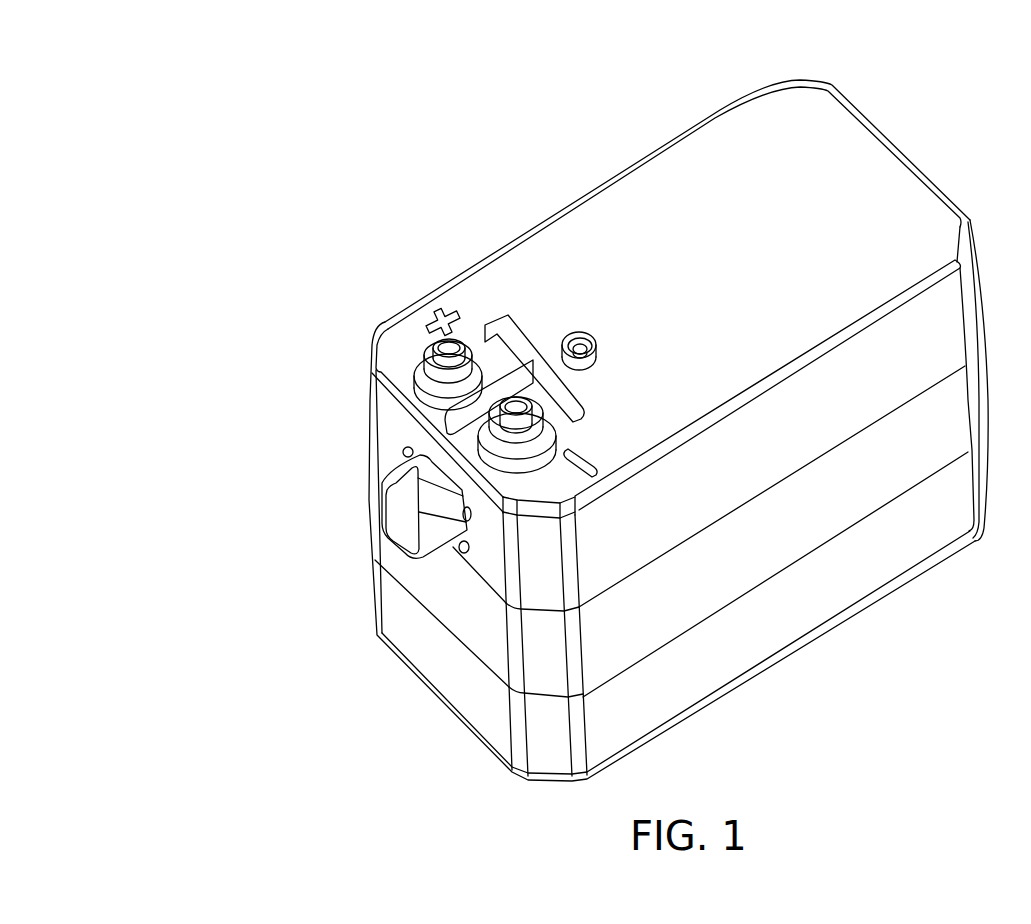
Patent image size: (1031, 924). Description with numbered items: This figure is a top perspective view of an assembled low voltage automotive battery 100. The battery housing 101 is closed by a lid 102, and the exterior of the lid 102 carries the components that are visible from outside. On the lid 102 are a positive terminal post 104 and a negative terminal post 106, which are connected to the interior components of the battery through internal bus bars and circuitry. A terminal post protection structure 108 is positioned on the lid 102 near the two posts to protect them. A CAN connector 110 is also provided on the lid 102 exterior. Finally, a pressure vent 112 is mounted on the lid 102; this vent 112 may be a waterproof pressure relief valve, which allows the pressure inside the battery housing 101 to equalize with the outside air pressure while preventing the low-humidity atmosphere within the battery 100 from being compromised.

The battery 100 is at (304, 119).
The battery housing 101 is at (368, 547).
The lid 102 is at (672, 146).
The positive terminal post 104 is at (445, 350).
The negative terminal post 106 is at (558, 430).
The terminal post protection structure 108 is at (527, 332).
The CAN connector 110 is at (412, 485).
The pressure vent 112 is at (599, 342).